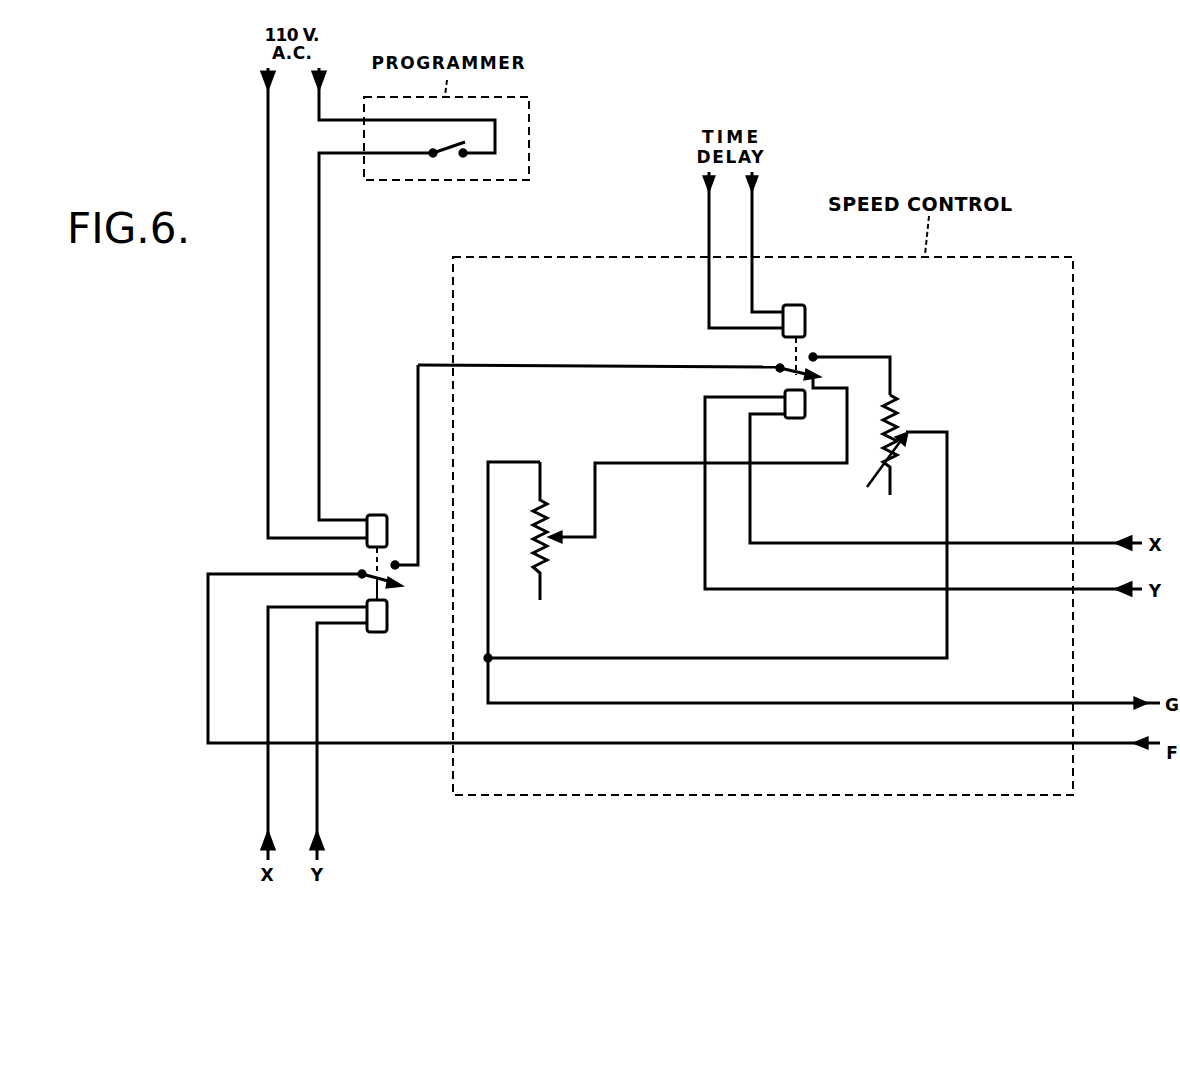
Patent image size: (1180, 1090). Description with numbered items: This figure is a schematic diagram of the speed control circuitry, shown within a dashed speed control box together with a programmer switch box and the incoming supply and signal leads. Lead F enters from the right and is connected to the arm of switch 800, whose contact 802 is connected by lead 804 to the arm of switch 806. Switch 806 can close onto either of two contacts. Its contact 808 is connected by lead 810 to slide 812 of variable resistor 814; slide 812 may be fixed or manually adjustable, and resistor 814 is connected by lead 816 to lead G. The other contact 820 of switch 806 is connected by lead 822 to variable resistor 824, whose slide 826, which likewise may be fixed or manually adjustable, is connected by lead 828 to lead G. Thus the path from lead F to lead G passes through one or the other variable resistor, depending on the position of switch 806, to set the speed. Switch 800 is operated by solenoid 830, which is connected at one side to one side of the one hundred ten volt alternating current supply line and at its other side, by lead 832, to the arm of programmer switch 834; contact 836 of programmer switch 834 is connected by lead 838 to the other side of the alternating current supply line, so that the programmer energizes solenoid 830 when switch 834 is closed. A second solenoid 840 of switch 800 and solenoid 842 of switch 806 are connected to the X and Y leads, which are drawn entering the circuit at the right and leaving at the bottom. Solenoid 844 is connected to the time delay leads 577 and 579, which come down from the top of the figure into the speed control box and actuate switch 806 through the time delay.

The time delay lead 577 is at (708, 233).
The time delay lead 579 is at (753, 233).
The switch 800 is at (370, 577).
The contact 802 is at (396, 560).
The lead 804 is at (590, 363).
The switch 806 is at (786, 363).
The contact 808 is at (822, 378).
The lead 810 is at (803, 465).
The slide 812 is at (560, 542).
The variable resistor 814 is at (538, 563).
The lead 816 is at (509, 460).
The contact 820 is at (815, 356).
The lead 822 is at (891, 355).
The variable resistor 824 is at (874, 473).
The slide 826 is at (913, 430).
The lead 828 is at (947, 487).
The solenoid 830 is at (373, 516).
The lead 832 is at (320, 300).
The programmer switch 834 is at (453, 146).
The contact 836 is at (463, 153).
The lead 838 is at (319, 110).
The solenoid 840 is at (385, 615).
The solenoid 842 is at (803, 408).
The solenoid 844 is at (803, 320).